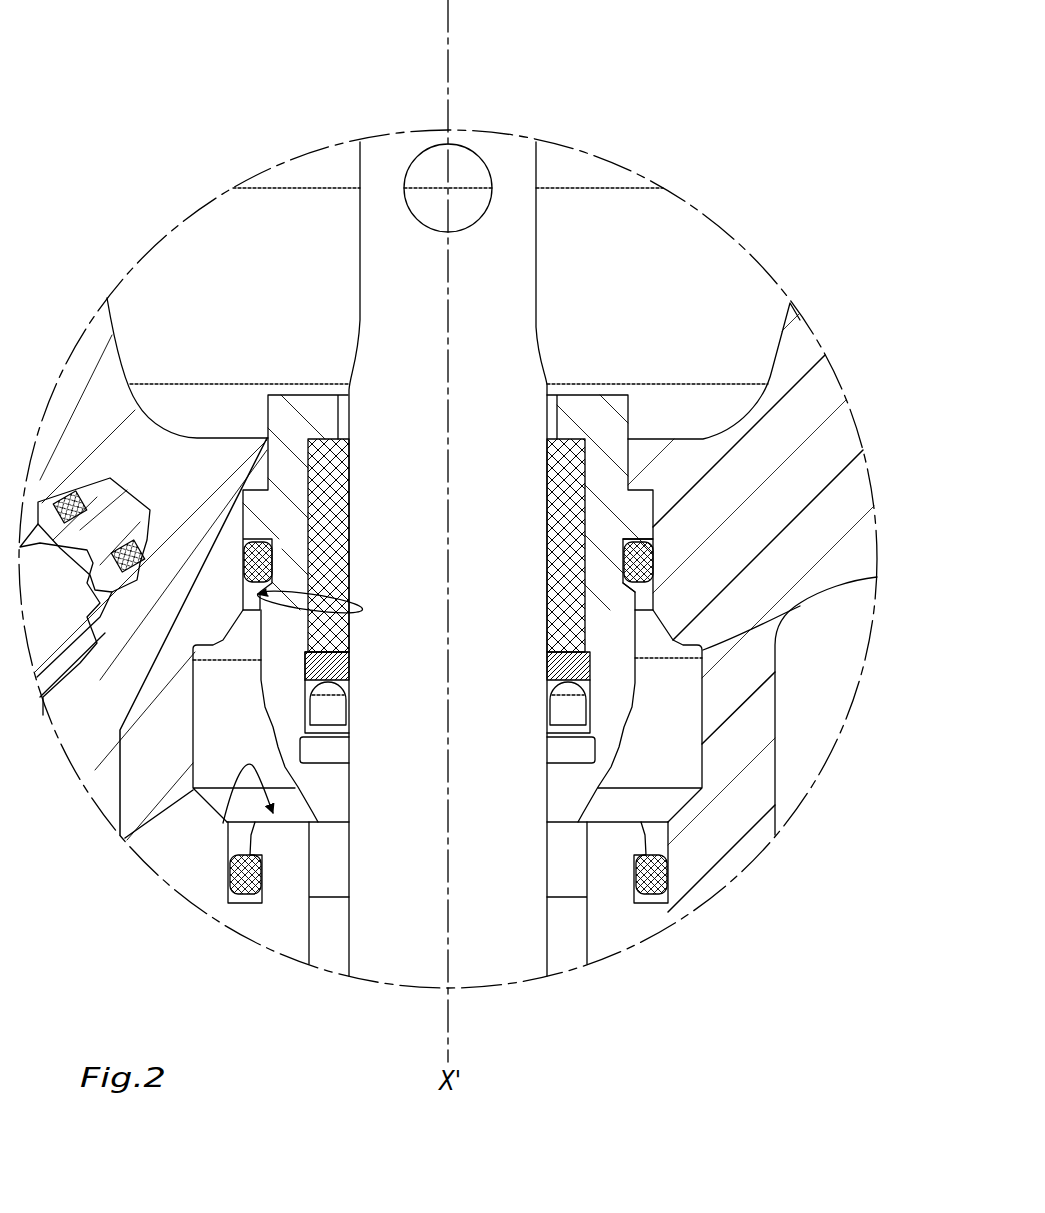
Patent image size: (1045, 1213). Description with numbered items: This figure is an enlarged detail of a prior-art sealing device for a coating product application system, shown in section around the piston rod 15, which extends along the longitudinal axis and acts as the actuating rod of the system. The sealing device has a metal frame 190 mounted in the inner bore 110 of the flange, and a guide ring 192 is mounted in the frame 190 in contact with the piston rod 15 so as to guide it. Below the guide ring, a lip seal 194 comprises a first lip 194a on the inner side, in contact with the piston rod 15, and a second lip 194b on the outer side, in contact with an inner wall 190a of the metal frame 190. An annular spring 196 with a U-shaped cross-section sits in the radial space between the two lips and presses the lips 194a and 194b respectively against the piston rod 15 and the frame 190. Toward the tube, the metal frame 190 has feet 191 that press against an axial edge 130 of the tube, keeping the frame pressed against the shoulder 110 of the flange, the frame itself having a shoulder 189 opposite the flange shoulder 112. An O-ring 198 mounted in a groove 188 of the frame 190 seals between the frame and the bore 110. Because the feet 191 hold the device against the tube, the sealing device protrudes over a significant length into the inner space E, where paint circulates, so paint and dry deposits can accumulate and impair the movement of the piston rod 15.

The piston rod 15 is at (385, 358).
The inner bore 110 is at (245, 598).
The shoulder 112 is at (245, 440).
The axial edge 130 is at (223, 823).
The groove 188 is at (640, 553).
The shoulder 189 is at (135, 467).
The metal frame 190 is at (601, 417).
The inner wall 190a is at (350, 674).
The feet 191 is at (313, 803).
The guide ring 192 is at (544, 440).
The lip seal 194 is at (590, 667).
The first lip 194a is at (352, 720).
The second lip 194b is at (303, 693).
The annular spring 196 is at (703, 770).
The O-ring 198 is at (653, 577).
The inner space E is at (650, 805).